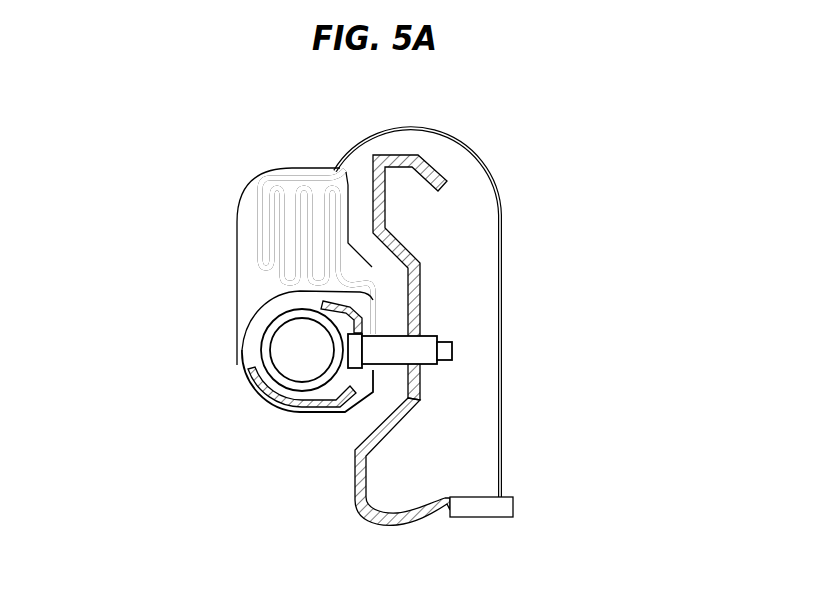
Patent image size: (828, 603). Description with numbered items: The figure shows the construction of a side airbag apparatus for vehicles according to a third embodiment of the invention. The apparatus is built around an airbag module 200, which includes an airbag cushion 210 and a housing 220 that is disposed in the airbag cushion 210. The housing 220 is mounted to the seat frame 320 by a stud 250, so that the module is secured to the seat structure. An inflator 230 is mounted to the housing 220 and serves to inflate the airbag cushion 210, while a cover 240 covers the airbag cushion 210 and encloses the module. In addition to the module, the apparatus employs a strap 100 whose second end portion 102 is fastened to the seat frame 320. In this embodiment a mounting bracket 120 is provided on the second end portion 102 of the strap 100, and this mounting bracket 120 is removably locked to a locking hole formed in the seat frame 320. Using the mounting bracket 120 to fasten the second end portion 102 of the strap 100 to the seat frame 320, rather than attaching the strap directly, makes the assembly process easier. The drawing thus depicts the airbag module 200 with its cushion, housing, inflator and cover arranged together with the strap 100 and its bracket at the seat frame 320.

The strap 100 is at (498, 187).
The second end portion 102 is at (502, 496).
The mounting bracket 120 is at (512, 507).
The airbag module 200 is at (218, 195).
The airbag cushion 210 is at (270, 172).
The housing 220 is at (253, 395).
The inflator 230 is at (262, 342).
The cover 240 is at (237, 256).
The stud 250 is at (452, 350).
The seat frame 320 is at (355, 490).